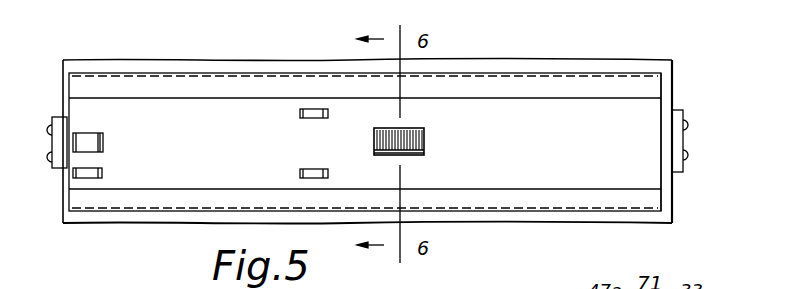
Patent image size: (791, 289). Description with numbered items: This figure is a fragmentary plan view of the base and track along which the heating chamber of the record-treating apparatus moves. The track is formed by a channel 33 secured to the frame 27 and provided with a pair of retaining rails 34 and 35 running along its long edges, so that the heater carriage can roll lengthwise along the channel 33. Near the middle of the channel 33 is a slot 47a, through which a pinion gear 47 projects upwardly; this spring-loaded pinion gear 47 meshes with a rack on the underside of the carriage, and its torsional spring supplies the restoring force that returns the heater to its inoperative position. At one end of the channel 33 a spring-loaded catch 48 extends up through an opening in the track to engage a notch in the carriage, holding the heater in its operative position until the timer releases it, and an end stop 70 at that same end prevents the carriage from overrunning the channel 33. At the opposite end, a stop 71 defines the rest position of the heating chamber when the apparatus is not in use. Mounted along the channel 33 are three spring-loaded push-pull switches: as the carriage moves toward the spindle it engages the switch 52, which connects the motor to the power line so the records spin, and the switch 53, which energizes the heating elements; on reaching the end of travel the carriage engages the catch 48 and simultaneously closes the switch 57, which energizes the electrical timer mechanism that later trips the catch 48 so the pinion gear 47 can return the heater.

The frame 27 is at (643, 70).
The channel 33 is at (647, 172).
The retaining rail 34 is at (457, 78).
The retaining rail 35 is at (177, 88).
The pinion gear 47 is at (410, 140).
The slot 47a is at (410, 157).
The catch 48 is at (90, 140).
The push-pull switch 52 is at (300, 116).
The push-pull switch 53 is at (305, 172).
The push-pull switch 57 is at (100, 173).
The end stop 70 is at (58, 160).
The stop 71 is at (677, 118).